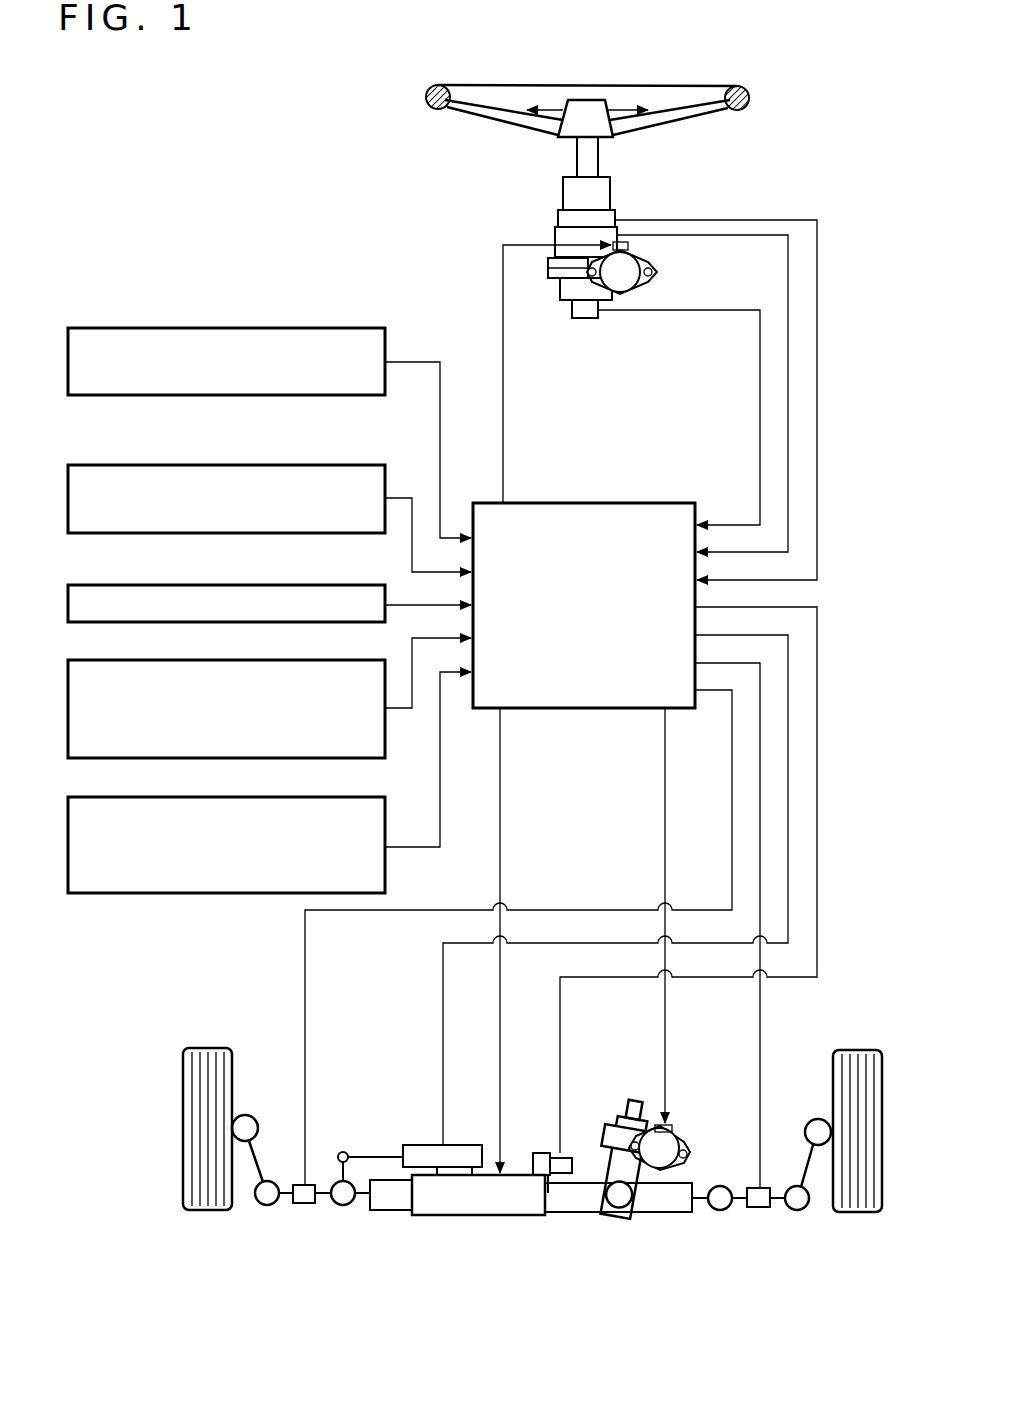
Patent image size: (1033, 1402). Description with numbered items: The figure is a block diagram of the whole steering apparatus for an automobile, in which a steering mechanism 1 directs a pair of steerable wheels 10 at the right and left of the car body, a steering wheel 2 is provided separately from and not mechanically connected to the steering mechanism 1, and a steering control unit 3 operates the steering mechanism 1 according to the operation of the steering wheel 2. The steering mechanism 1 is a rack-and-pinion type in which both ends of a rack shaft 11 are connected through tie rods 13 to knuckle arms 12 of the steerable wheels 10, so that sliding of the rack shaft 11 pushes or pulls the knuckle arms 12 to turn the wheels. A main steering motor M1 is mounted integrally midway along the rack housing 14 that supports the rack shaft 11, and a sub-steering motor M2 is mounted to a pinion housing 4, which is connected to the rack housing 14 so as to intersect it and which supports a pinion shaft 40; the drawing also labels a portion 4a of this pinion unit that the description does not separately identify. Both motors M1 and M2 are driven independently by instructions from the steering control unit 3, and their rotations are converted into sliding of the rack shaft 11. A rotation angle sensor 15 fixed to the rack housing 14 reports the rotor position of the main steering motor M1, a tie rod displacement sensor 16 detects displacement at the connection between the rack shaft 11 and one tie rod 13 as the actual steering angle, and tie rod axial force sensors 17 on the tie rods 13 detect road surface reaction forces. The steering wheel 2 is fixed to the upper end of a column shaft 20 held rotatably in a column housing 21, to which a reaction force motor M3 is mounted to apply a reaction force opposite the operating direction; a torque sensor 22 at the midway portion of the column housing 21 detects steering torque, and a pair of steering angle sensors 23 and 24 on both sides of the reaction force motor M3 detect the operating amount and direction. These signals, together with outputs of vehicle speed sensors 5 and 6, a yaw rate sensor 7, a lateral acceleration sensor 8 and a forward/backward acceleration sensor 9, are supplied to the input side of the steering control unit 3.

The steering mechanism 1 is at (533, 1250).
The steering wheel 2 is at (428, 97).
The steering control unit 3 is at (628, 500).
The pinion housing 4 is at (603, 1170).
The pinion gear flange 4a is at (602, 1130).
The vehicle speed sensor 5 is at (118, 328).
The vehicle speed sensor 6 is at (118, 465).
The yaw rate sensor 7 is at (110, 585).
The lateral acceleration sensor 8 is at (108, 660).
The forward/backward acceleration sensor 9 is at (95, 797).
The steerable wheels 10 is at (200, 1208).
The rack shaft 11 is at (362, 1204).
The knuckle arms 12 is at (255, 1163).
The tie rods 13 is at (290, 1204).
The rack housing 14 is at (392, 1212).
The rotation angle sensor 15 is at (553, 1157).
The tie rod displacement sensor 16 is at (425, 1145).
The tie rod axial force sensors 17 is at (302, 1183).
The column shaft 20 is at (598, 160).
The column housing 21 is at (610, 190).
The torque sensor 22 is at (555, 233).
The steering angle sensor 23 is at (558, 218).
The steering angle sensor 24 is at (568, 313).
The pinion shaft 40 is at (627, 1102).
The main steering motor M1 is at (468, 1218).
The sub-steering motor M2 is at (670, 1145).
The reaction force motor M3 is at (625, 283).